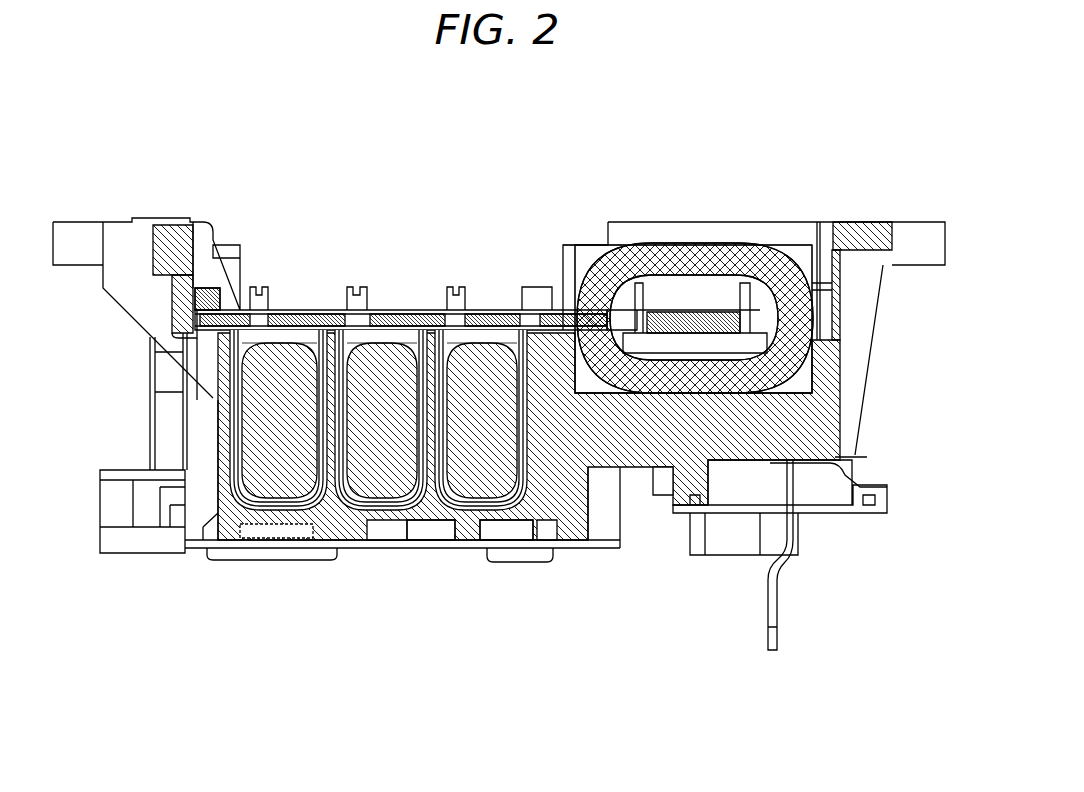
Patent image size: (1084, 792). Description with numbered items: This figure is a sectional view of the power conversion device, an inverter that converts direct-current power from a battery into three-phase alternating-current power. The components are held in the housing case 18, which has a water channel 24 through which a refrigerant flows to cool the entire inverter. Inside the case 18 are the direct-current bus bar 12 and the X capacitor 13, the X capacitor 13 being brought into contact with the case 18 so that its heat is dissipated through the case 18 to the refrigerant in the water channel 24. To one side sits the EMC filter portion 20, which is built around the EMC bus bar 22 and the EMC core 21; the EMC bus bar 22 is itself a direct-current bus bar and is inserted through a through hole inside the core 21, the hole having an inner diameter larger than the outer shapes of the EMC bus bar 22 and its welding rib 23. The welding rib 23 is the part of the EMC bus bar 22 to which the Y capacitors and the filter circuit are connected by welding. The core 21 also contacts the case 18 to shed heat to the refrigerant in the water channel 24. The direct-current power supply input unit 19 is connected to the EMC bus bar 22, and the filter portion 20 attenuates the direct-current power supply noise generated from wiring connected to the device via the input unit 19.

The direct-current bus bar 12 is at (351, 310).
The X capacitor 13 is at (460, 480).
The housing case 18 is at (637, 447).
The direct-current power supply input unit 19 is at (772, 652).
The EMC filter portion 20 is at (577, 162).
The EMC core 21 is at (575, 325).
The EMC bus bar 22 is at (673, 318).
The welding rib 23 is at (775, 300).
The water channel 24 is at (447, 532).